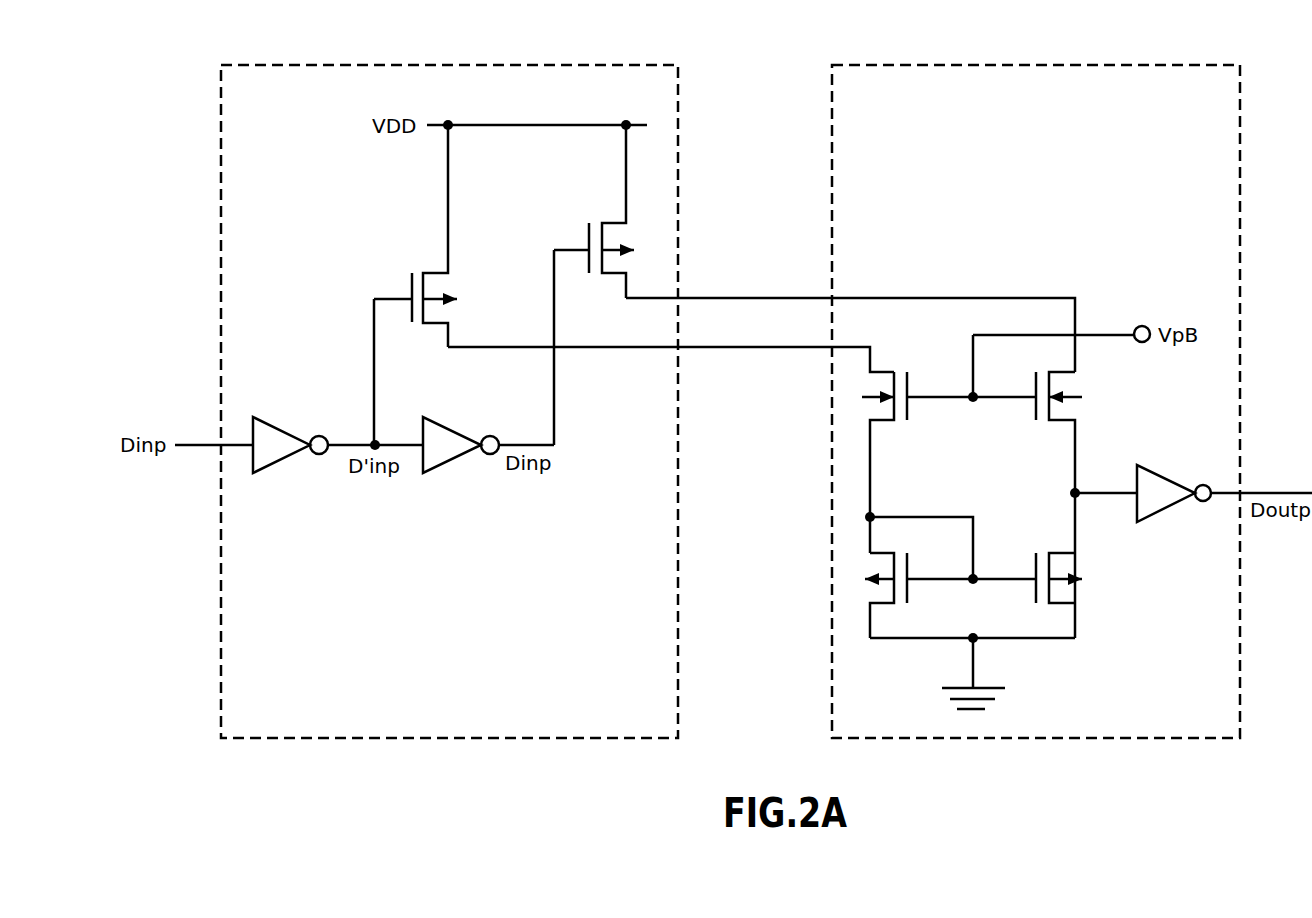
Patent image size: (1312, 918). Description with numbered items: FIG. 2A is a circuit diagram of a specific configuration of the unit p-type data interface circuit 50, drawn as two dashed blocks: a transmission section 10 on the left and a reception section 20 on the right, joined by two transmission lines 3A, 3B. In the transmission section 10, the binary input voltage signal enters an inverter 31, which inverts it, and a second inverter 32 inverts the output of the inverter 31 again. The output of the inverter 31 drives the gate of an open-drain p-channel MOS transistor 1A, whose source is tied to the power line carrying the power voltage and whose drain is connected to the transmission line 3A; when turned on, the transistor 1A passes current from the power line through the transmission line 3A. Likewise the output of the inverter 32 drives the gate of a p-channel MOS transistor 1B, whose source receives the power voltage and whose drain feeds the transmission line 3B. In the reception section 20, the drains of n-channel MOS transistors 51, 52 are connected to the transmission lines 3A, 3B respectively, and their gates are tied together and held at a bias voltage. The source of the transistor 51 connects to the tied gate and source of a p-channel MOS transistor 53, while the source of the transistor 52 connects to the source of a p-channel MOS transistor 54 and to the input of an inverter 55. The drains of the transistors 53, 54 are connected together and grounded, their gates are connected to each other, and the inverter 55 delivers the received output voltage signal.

The transmission section 10 is at (616, 63).
The reception section 20 is at (895, 62).
The p-channel MOS transistor 1A is at (440, 273).
The p-channel MOS transistor 1B is at (615, 223).
The transmission line 3A is at (740, 347).
The transmission line 3B is at (745, 298).
The inverter 31 is at (278, 463).
The inverter 32 is at (458, 463).
The unit p-type data interface circuit 50 is at (771, 624).
The n-channel MOS transistor 51 is at (888, 423).
The n-channel MOS transistor 52 is at (1058, 423).
The p-channel MOS transistor 53 is at (888, 605).
The p-channel MOS transistor 54 is at (1058, 605).
The inverter 55 is at (1168, 507).